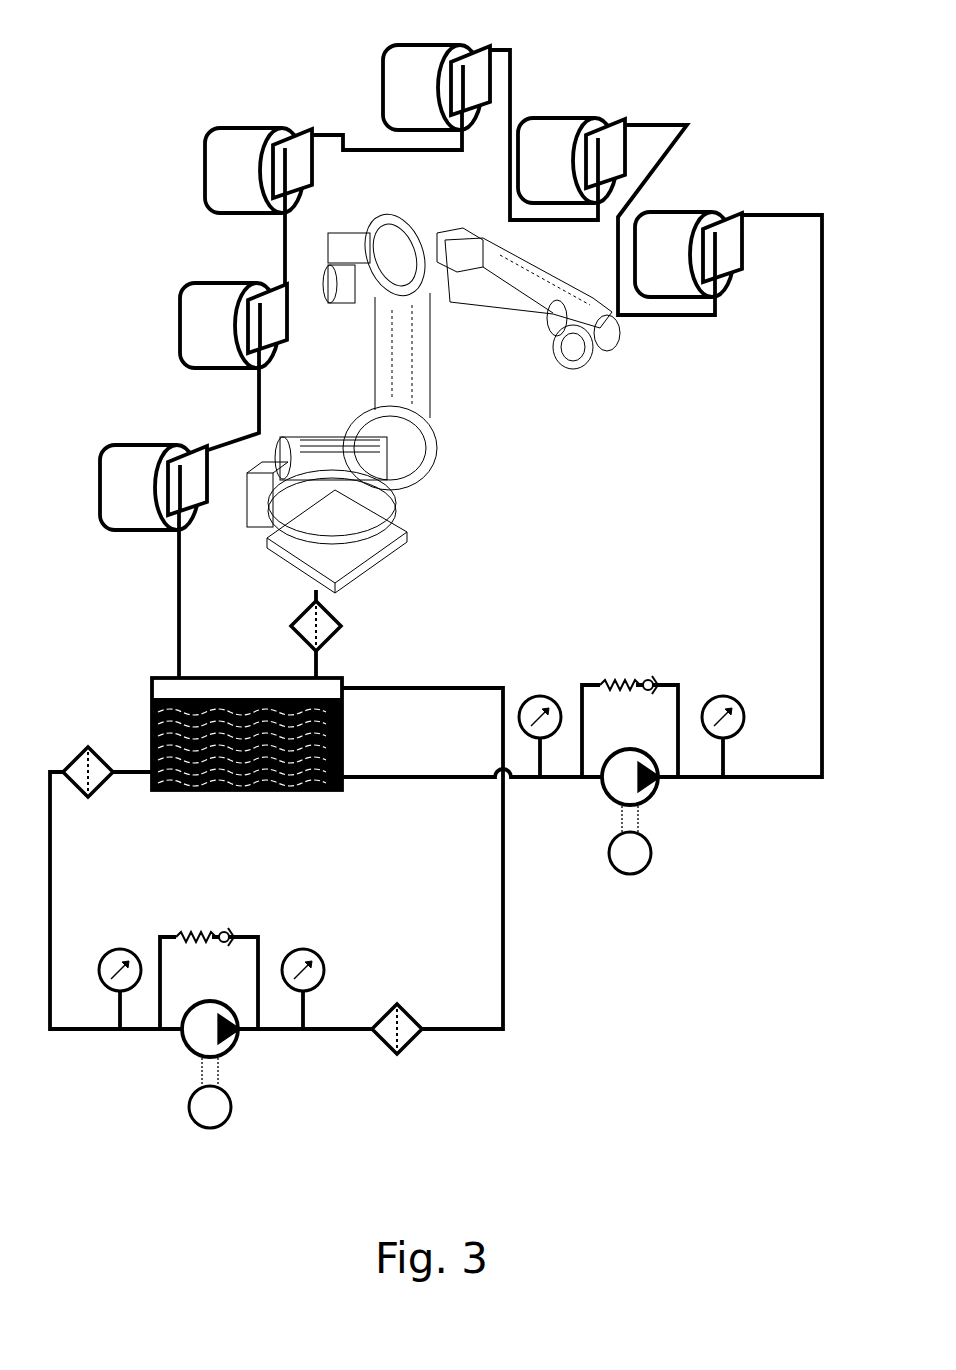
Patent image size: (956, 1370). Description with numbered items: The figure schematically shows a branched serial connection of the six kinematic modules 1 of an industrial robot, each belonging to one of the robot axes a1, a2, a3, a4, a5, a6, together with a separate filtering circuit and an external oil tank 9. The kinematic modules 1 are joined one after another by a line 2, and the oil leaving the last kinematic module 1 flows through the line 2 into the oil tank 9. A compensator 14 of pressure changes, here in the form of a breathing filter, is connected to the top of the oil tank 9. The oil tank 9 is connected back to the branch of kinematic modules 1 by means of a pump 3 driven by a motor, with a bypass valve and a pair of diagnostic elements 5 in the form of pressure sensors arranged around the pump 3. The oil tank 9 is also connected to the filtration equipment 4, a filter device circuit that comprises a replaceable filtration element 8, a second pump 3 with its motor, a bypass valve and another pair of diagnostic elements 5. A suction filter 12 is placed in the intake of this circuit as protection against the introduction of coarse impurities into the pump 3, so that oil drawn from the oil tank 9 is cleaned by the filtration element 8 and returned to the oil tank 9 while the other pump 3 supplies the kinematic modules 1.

The kinematic module 1 is at (401, 269).
The line 2 is at (332, 133).
The pump 3 is at (648, 803).
The filtration equipment 4 is at (412, 1029).
The diagnostic element 5 is at (728, 695).
The filtration element 8 is at (402, 1017).
The oil tank 9 is at (243, 793).
The suction filter 12 is at (89, 746).
The compensator 14 is at (342, 625).
The axis 1 a1 is at (133, 487).
The axis 2 a2 is at (210, 325).
The axis 3 a3 is at (236, 170).
The axis 4 a4 is at (436, 69).
The axis 5 a5 is at (571, 143).
The axis 6 a6 is at (688, 236).